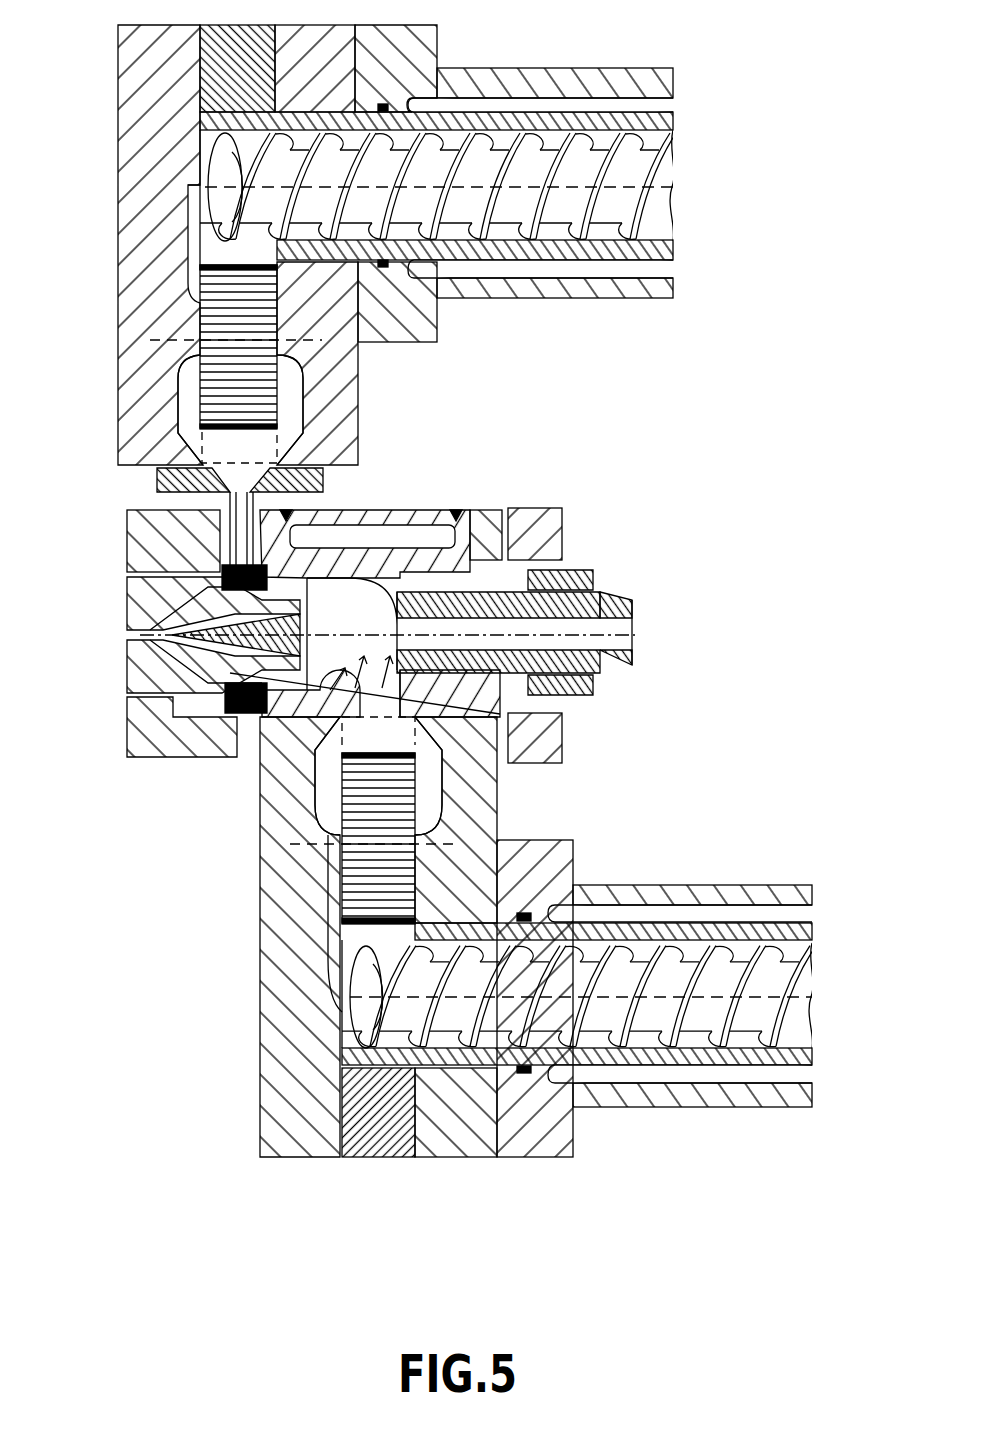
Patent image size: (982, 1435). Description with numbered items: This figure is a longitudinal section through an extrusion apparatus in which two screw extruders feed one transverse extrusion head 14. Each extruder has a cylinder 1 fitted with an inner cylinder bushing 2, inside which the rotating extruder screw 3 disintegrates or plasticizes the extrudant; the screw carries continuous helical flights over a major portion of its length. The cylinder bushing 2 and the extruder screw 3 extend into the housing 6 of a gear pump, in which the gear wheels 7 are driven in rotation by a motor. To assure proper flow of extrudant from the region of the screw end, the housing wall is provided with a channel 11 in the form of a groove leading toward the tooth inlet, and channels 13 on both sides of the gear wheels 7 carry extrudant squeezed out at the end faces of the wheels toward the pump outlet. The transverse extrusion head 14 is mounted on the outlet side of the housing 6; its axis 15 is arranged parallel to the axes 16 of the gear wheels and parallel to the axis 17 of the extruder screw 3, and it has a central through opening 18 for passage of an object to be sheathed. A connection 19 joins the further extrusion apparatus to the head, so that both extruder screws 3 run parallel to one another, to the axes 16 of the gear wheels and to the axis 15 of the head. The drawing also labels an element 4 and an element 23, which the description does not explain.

The cylinder 1 is at (621, 284).
The cylinder bushing 2 is at (573, 249).
The extruder screw 3 is at (524, 200).
The screw flight 4 is at (498, 226).
The housing of the gear pump 6 is at (145, 427).
The gear wheel 7 is at (230, 370).
The channel 11 is at (183, 188).
The channels 13 is at (188, 398).
The transverse extrusion head 14 is at (415, 555).
The axis of the transverse extrusion head 15 is at (476, 632).
The axes of the gear wheels 16 is at (187, 340).
The axis of the extruder screw 17 is at (519, 185).
The central through opening 18 is at (547, 618).
The connection 19 is at (157, 487).
The support block 23 is at (438, 344).